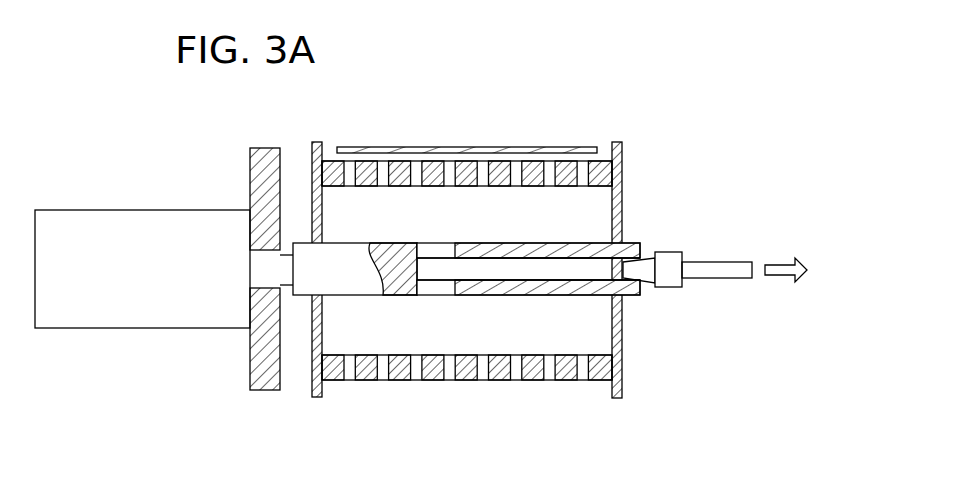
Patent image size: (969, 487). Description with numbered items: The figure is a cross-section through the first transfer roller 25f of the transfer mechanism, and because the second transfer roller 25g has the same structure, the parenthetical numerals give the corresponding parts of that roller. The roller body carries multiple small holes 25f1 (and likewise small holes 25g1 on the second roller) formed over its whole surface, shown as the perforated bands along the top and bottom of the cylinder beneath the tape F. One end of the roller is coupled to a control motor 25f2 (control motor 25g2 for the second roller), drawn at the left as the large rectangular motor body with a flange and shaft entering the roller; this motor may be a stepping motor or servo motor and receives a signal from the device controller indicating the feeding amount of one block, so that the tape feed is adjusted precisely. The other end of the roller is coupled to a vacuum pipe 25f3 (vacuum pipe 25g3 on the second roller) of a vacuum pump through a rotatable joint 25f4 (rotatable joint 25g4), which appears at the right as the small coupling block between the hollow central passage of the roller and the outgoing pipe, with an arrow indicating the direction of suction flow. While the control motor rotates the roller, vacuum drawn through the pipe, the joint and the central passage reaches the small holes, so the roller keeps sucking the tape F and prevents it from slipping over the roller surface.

The first transfer roller 25f is at (631, 139).
The second transfer roller 25g is at (547, 247).
The small holes 25f1 is at (515, 374).
The small holes 25g1 is at (467, 309).
The control motor 25f2 is at (142, 225).
The control motor 25g2 is at (164, 260).
The vacuum pipe 25f3 is at (740, 268).
The vacuum pipe 25g3 is at (742, 233).
The rotatable joint 25f4 is at (668, 259).
The rotatable joint 25g4 is at (504, 236).
The tape F is at (465, 148).